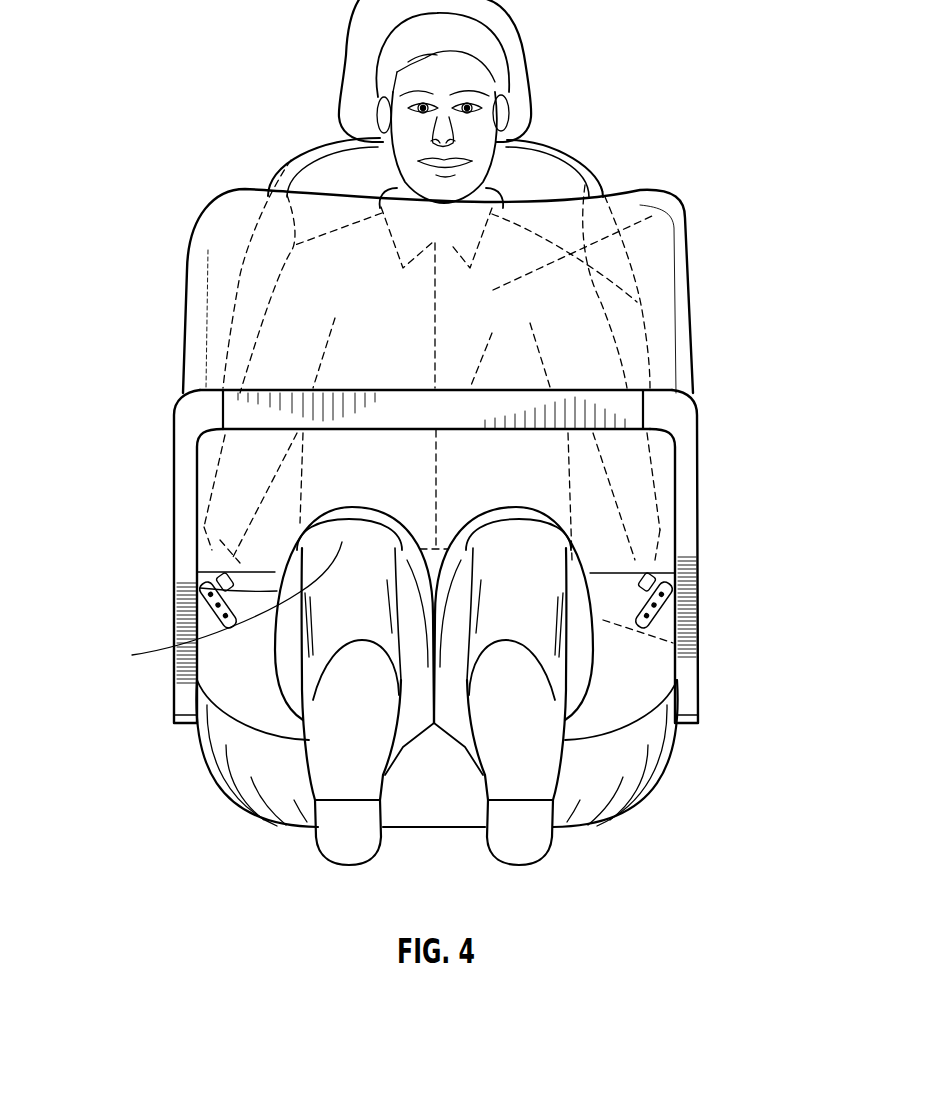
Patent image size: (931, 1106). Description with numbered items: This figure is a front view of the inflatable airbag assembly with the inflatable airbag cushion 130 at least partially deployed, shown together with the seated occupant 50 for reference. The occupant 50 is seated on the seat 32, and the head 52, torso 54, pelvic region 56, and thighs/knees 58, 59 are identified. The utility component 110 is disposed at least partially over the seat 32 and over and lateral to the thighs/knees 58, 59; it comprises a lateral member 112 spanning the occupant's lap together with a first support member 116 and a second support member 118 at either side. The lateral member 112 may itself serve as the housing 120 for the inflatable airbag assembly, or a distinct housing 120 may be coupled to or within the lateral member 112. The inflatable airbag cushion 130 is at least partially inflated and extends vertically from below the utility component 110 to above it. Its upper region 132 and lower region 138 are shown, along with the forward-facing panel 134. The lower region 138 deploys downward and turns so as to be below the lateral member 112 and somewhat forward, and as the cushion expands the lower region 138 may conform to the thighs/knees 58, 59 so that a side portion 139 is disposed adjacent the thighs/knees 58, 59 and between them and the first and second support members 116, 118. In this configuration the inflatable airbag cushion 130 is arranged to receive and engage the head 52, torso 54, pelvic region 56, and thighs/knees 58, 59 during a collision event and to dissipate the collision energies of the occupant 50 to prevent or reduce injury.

The seat 32 is at (202, 713).
The occupant 50 is at (322, 108).
The head 52 is at (512, 81).
The torso 54 is at (300, 212).
The pelvic region 56 is at (680, 651).
The thighs 58 is at (200, 587).
The knees 59 is at (221, 606).
The utility component 110 is at (275, 388).
The lateral member 112 is at (375, 388).
The first support member 116 is at (172, 483).
The second support member 118 is at (700, 510).
The housing 120 is at (547, 365).
The inflatable airbag cushion 130 is at (667, 467).
The upper region 132 is at (617, 282).
The forward-facing panel 134 is at (240, 333).
The lower region 138 is at (313, 480).
The side portion 139 is at (648, 540).